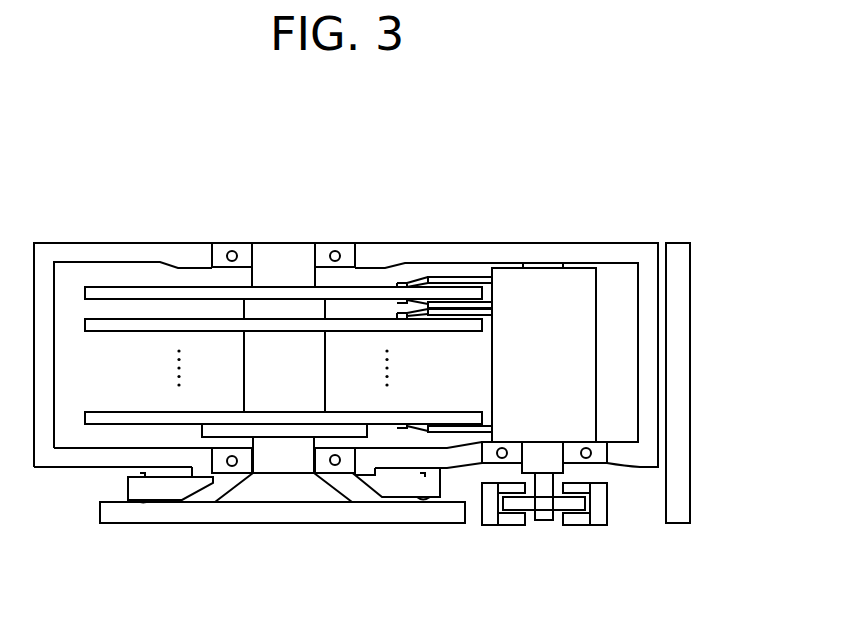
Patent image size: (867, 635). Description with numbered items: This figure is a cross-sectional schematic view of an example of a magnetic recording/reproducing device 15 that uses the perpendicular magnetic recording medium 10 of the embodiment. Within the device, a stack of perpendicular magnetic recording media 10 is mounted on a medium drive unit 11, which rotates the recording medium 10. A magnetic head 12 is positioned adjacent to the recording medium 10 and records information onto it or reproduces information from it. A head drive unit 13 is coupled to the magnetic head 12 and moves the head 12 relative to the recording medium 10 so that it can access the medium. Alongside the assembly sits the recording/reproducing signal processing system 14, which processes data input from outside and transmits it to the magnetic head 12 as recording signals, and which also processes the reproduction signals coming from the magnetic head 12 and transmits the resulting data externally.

The perpendicular magnetic recording medium 10 is at (93, 296).
The medium drive unit 11 is at (292, 460).
The magnetic head 12 is at (403, 283).
The head drive unit 13 is at (547, 282).
The recording/reproducing signal processing system 14 is at (676, 514).
The magnetic recording/reproducing device 15 is at (653, 184).